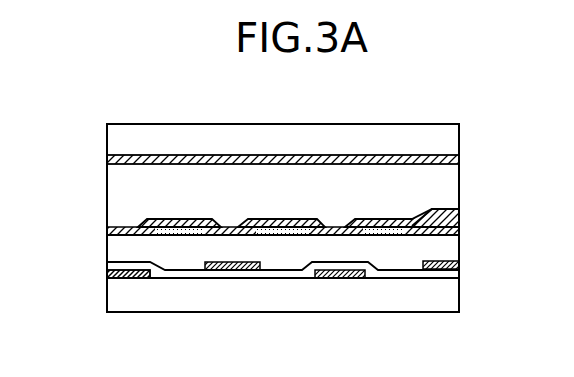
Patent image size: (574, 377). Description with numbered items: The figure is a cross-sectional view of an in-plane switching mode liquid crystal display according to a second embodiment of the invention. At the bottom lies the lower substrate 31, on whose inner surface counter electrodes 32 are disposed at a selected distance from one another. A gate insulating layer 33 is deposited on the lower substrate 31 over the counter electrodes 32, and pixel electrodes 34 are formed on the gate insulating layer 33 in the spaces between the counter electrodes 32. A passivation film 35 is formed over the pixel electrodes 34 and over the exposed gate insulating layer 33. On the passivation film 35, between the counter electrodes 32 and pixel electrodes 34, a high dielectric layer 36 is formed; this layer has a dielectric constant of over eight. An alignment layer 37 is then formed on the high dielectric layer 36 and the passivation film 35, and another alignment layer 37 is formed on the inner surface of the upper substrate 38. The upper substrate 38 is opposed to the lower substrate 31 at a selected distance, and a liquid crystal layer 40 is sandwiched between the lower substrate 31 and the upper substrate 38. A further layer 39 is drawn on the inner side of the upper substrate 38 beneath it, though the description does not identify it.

The lower substrate 31 is at (459, 302).
The counter electrodes 32 is at (112, 275).
The gate insulating layer 33 is at (459, 277).
The pixel electrodes 34 is at (459, 267).
The passivation film 35 is at (112, 244).
The high dielectric layer 36 is at (459, 232).
The alignment layer 37 is at (459, 209).
The upper substrate 38 is at (452, 137).
The counter electrode 39 is at (452, 159).
The liquid crystal layer 40 is at (112, 195).